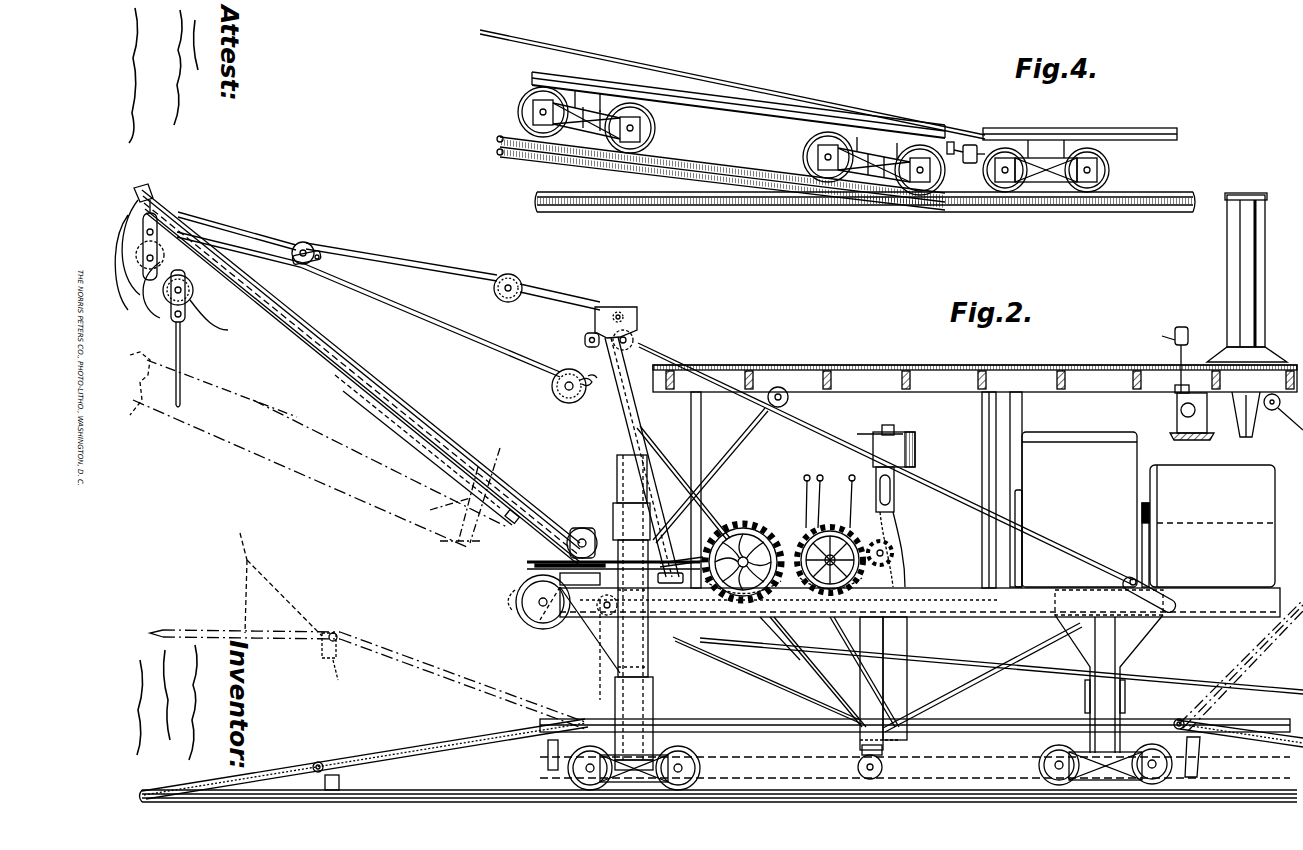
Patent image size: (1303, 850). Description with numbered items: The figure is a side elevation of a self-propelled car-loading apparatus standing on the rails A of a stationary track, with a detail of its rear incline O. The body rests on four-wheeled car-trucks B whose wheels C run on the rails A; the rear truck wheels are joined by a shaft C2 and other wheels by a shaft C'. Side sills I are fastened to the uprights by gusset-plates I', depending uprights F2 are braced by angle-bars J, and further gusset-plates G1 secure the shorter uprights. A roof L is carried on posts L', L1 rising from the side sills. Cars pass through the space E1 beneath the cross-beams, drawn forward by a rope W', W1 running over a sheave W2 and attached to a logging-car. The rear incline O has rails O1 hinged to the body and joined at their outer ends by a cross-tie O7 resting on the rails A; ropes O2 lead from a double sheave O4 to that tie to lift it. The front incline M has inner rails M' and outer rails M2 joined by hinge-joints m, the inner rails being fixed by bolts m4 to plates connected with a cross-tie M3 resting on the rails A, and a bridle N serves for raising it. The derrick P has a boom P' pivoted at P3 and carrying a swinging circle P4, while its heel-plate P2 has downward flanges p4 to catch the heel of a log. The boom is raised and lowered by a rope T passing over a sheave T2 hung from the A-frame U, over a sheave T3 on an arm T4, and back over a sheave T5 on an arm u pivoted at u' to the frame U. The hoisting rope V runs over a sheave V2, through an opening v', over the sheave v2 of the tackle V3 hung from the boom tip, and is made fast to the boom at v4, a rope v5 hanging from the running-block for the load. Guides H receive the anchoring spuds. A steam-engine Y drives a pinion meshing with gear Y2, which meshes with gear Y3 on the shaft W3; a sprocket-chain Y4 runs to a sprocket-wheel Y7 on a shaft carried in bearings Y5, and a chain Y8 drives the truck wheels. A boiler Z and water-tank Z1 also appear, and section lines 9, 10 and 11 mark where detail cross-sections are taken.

In FIG. 4, the rope W1 is at (640, 55).
In FIG. 4, the rails of rear incline O1 is at (705, 120).
In FIG. 4, the shaft W3 is at (1177, 140).
In FIG. 4, the cross-tie O7 is at (766, 210).
In FIG. 4, the rails A is at (1001, 233).
In FIG. 2, the rails A is at (719, 782).
In FIG. 2, the roof L is at (975, 362).
In FIG. 2, the roof post L1 is at (692, 430).
In FIG. 2, the posts L' is at (1001, 490).
In FIG. 2, the ropes O2 is at (940, 416).
In FIG. 2, the boiler Z is at (1073, 489).
In FIG. 2, the water-tank Z1 is at (1208, 526).
In FIG. 2, the A-frame U is at (625, 447).
In FIG. 2, the arm u is at (560, 292).
In FIG. 2, the pivot connection u' is at (639, 297).
In FIG. 2, the double sheave O4 is at (788, 402).
In FIG. 2, the derrick P is at (357, 375).
In FIG. 2, the boom P' is at (253, 248).
In FIG. 2, the heel-plate P2 is at (320, 473).
In FIG. 2, the flanges p4 is at (242, 390).
In FIG. 2, the opening v' is at (409, 394).
In FIG. 2, the section line 10 is at (478, 492).
In FIG. 2, the arm T4 is at (250, 245).
In FIG. 2, the sheave T3 is at (310, 242).
In FIG. 2, the sheave T5 is at (426, 272).
In FIG. 2, the rope T is at (475, 343).
In FIG. 2, the sheave T2 is at (567, 404).
In FIG. 2, the tackle V3 is at (218, 325).
In FIG. 2, the rope V is at (483, 447).
In FIG. 2, the sheave v2 is at (160, 290).
In FIG. 2, the attachment point v4 is at (188, 210).
In FIG. 2, the rope v5 is at (190, 352).
In FIG. 2, the section line 9 is at (255, 240).
In FIG. 2, the guides H is at (630, 698).
In FIG. 2, the boom pivot P3 is at (575, 625).
In FIG. 2, the swinging circle P4 is at (508, 578).
In FIG. 2, the sheave V2 is at (588, 535).
In FIG. 2, the sheave W2 is at (535, 625).
In FIG. 2, the rails of outer incline section M2 is at (212, 770).
In FIG. 2, the side sills I is at (920, 602).
In FIG. 2, the gusset-plates I' is at (992, 603).
In FIG. 2, the angle-bars J is at (906, 683).
In FIG. 2, the space E1 is at (767, 680).
In FIG. 2, the uprights F2 is at (900, 655).
In FIG. 2, the rope W' is at (967, 643).
In FIG. 2, the gusset-plates G1 is at (1078, 690).
In FIG. 2, the sprocket-chain Y4 is at (775, 640).
In FIG. 2, the wheel shaft C' is at (926, 709).
In FIG. 2, the gear Y3 is at (743, 540).
In FIG. 2, the gear Y2 is at (844, 534).
In FIG. 2, the steam-engine Y is at (910, 510).
In FIG. 2, the sprocket-wheel Y7 is at (858, 752).
In FIG. 2, the bearings Y5 is at (888, 752).
In FIG. 2, the sprocket-chain Y8 is at (785, 795).
In FIG. 2, the car-trucks B is at (915, 748).
In FIG. 2, the wheels C is at (844, 788).
In FIG. 2, the shaft C2 is at (1048, 785).
In FIG. 2, the section line 11 is at (632, 795).
In FIG. 2, the front incline M is at (365, 759).
In FIG. 2, the rails of inner incline section M' is at (451, 728).
In FIG. 2, the hinge-joints m is at (313, 765).
In FIG. 2, the bolts m4 is at (240, 800).
In FIG. 2, the cross-tie M3 is at (367, 709).
In FIG. 2, the bridle N is at (289, 606).
In FIG. 2, the rear incline O is at (1238, 673).